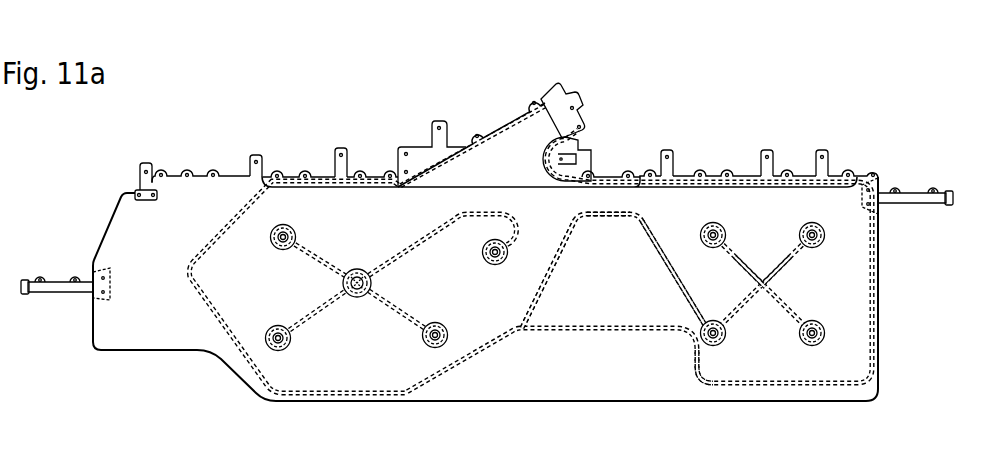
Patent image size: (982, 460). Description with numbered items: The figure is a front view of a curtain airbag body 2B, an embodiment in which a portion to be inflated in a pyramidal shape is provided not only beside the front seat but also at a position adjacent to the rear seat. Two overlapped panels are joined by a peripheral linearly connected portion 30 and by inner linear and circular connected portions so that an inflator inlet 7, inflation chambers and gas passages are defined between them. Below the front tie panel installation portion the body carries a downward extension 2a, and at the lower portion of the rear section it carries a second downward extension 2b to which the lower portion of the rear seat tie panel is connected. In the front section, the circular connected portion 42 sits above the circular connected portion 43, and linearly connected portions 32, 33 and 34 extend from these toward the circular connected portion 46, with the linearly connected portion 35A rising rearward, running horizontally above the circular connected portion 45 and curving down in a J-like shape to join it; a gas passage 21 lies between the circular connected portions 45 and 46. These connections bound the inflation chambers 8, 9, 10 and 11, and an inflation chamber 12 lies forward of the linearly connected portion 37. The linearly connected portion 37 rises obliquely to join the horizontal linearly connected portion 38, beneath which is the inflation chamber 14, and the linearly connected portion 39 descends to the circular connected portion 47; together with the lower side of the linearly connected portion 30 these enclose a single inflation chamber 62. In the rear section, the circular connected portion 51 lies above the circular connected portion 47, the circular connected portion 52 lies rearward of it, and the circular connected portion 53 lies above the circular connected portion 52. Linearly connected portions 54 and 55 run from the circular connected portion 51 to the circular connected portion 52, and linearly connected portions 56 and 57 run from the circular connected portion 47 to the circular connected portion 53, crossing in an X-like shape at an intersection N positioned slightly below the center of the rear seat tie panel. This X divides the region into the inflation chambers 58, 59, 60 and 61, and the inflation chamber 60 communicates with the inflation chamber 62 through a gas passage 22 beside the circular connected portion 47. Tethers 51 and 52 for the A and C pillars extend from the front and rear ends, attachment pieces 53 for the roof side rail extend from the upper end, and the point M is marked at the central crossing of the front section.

The curtain airbag body 2B is at (636, 88).
The extension 2a is at (310, 404).
The extension 2b is at (807, 396).
The inflator inlet 7 is at (584, 126).
The inflation chamber 8 is at (374, 222).
The inflation chamber 9 is at (275, 297).
The inflation chamber 10 is at (376, 355).
The inflation chamber 11 is at (449, 282).
The inflation chamber 12 is at (512, 300).
The inflation chamber 14 is at (612, 196).
The gas passage 21 is at (467, 309).
The gas passage 22 is at (698, 345).
The linearly connected portion 30 is at (505, 124).
The linearly connected portion 32 is at (313, 253).
The linearly connected portion 33 is at (372, 284).
The linearly connected portion 34 is at (338, 303).
The linearly connected portion 35A is at (417, 247).
The linearly connected portion 37 is at (565, 268).
The linearly connected portion 38 is at (598, 218).
The linearly connected portion 39 is at (684, 292).
The circular connected portion 42 is at (292, 228).
The circular connected portion 43 is at (290, 350).
The circular connected portion 45 is at (512, 254).
The circular connected portion 46 is at (422, 347).
The circular connected portion 47 is at (725, 345).
The circular connected portion 51 is at (45, 291).
The circular connected portion 52 is at (908, 192).
The circular connected portion 53 is at (140, 170).
The linearly connected portion 54 is at (740, 268).
The linearly connected portion 55 is at (783, 305).
The linearly connected portion 56 is at (742, 310).
The linearly connected portion 57 is at (779, 267).
The inflation chamber 58 is at (754, 226).
The inflation chamber 59 is at (840, 308).
The inflation chamber 60 is at (805, 375).
The inflation chamber 61 is at (707, 273).
The inflation chamber 62 is at (610, 302).
The point M is at (356, 270).
The intersection N is at (771, 283).